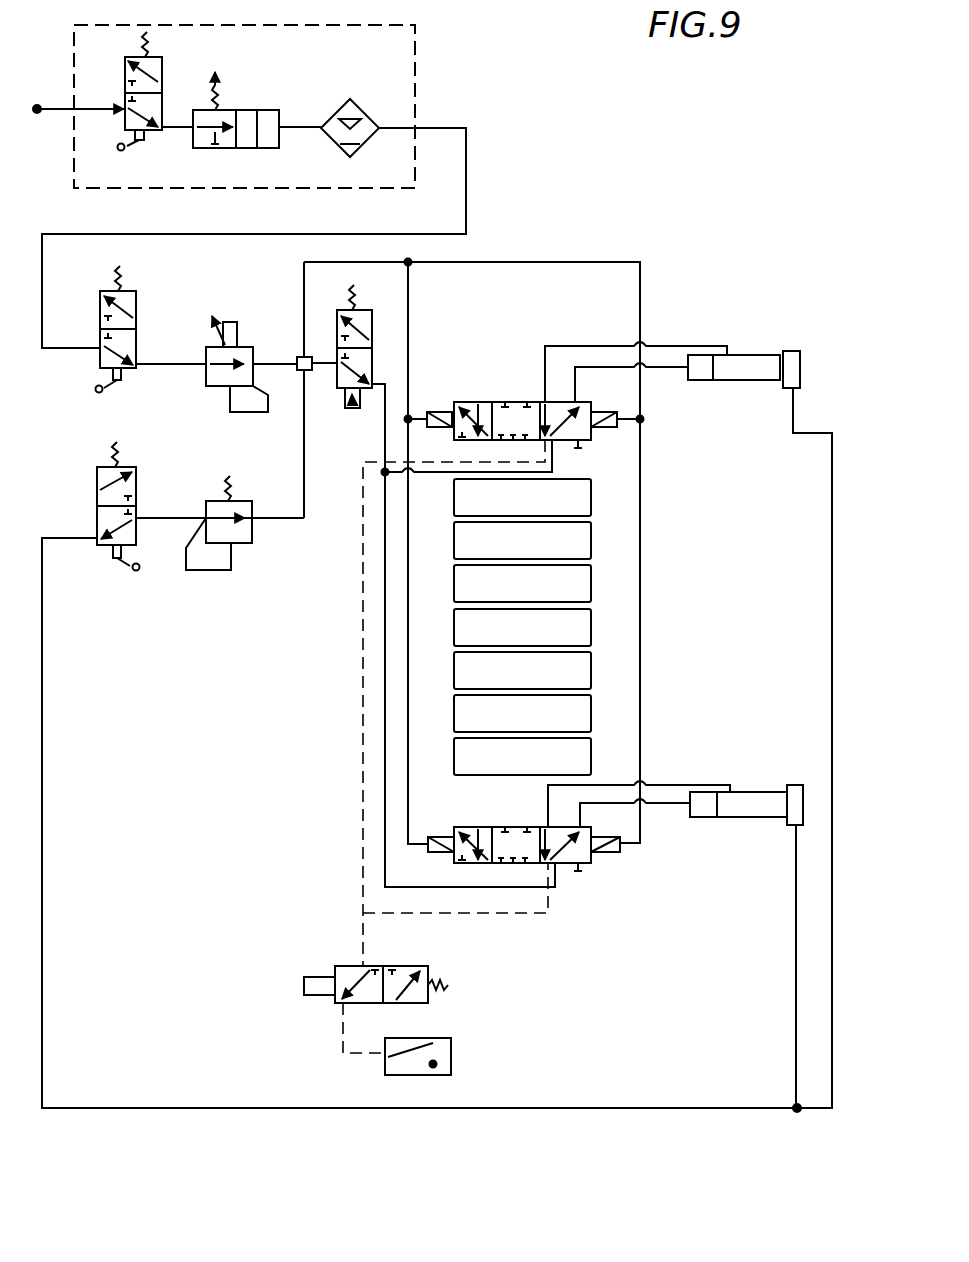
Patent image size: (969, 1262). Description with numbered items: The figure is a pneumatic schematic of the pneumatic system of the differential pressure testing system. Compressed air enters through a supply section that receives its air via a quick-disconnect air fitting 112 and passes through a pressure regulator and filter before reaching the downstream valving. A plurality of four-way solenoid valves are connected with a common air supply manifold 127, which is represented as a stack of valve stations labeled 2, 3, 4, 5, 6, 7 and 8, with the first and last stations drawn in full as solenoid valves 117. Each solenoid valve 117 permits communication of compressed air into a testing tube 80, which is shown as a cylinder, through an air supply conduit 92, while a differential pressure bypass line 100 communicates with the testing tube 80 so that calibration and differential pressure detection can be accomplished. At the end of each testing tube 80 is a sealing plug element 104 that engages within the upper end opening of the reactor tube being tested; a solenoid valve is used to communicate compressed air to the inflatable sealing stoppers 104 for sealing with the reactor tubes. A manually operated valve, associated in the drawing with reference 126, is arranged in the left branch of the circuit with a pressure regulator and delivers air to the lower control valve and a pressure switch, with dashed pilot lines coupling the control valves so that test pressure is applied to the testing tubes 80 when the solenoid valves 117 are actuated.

The solenoid valve 117 is at (476, 401).
The differential pressure bypass line 100 is at (597, 345).
The sealing plug element 104 is at (793, 350).
The air supply conduit 92 is at (670, 370).
The testing tube 80 is at (748, 381).
The common air supply manifold 127 is at (581, 618).
The quick-disconnect air fitting 112 is at (580, 692).
The computer cable 126 is at (97, 490).
The valve station 2 is at (522, 497).
The valve station 3 is at (522, 540).
The valve station 4 is at (522, 583).
The valve station 5 is at (522, 627).
The valve station 6 is at (522, 670).
The valve station 7 is at (522, 713).
The valve station 8 is at (522, 756).